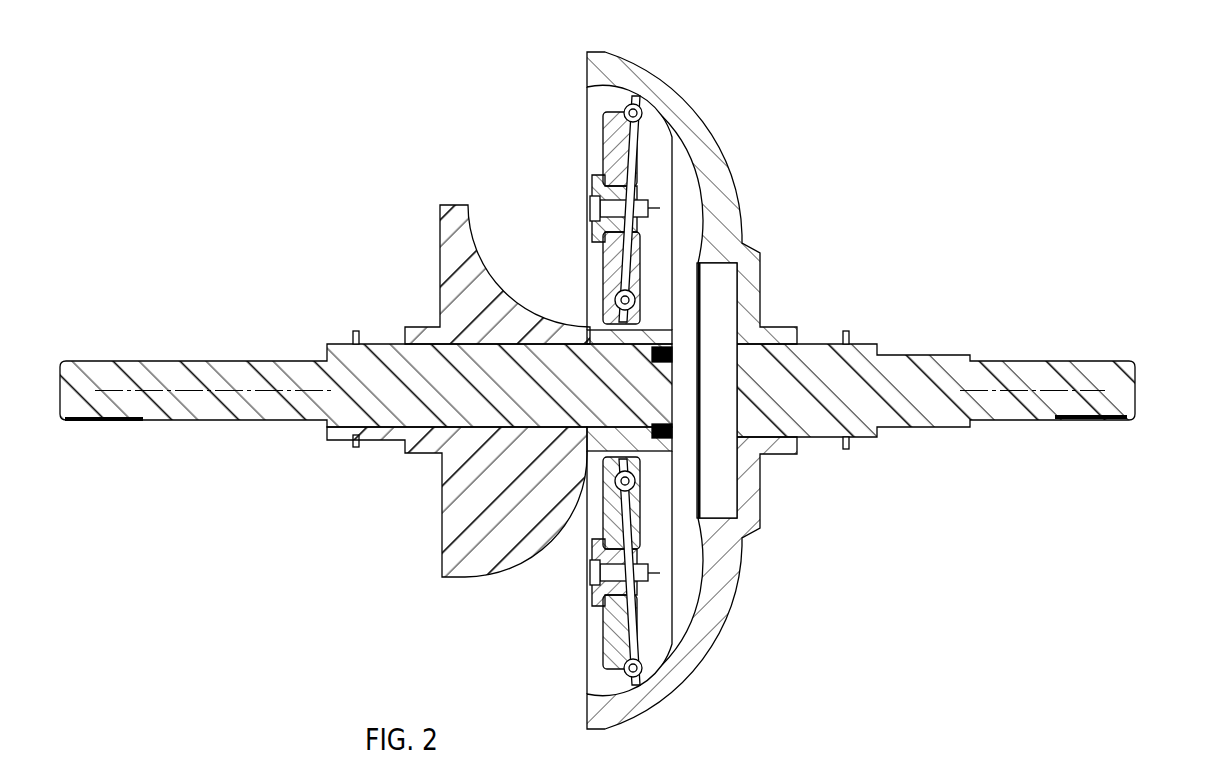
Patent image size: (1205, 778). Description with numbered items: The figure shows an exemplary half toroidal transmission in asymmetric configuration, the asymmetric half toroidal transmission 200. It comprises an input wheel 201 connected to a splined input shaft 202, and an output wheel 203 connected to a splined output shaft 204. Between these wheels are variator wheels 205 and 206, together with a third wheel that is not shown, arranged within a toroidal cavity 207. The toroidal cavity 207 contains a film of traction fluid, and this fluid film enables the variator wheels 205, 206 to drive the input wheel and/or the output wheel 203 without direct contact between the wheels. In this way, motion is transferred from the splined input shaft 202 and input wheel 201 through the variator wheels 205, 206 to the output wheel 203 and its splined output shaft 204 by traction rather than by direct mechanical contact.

The asymmetric half toroidal transmission 200 is at (622, 370).
The input wheel 201 is at (436, 246).
The splined input shaft 202 is at (259, 424).
The output wheel 203 is at (692, 82).
The splined output shaft 204 is at (1066, 358).
The variator wheel 205 is at (657, 165).
The variator wheel 206 is at (663, 641).
The toroidal cavity 207 is at (606, 101).